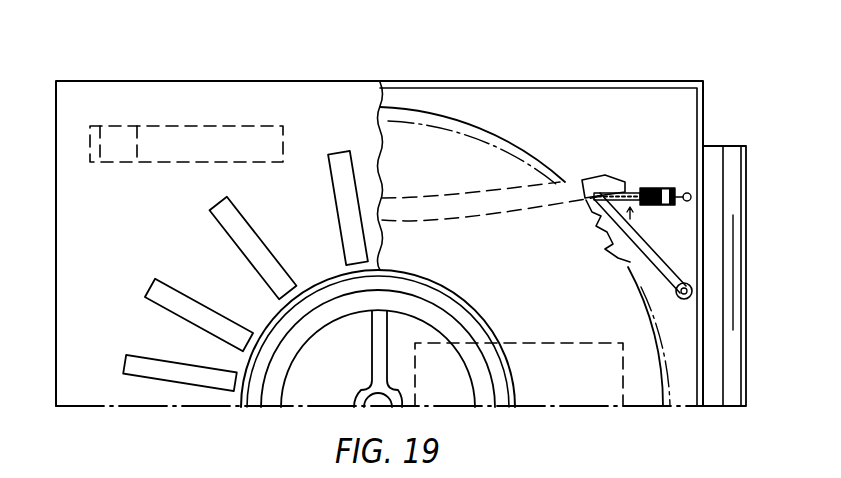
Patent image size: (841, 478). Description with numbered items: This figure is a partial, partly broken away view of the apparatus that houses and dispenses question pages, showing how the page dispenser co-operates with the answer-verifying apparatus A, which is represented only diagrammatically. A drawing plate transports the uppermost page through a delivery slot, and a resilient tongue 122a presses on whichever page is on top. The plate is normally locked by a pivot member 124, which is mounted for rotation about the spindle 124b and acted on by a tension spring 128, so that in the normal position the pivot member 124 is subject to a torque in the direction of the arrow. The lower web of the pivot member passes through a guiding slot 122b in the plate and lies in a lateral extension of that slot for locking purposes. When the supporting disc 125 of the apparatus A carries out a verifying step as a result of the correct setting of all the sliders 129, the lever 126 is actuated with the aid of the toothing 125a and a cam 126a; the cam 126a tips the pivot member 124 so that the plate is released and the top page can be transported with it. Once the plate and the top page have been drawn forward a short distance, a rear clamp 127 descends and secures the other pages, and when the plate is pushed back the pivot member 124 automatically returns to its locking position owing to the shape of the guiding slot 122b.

The answer-verifying apparatus A is at (100, 92).
The rear clamp 127 is at (94, 163).
The sliders 129 is at (232, 210).
The resilient tongue 122a is at (622, 393).
The guiding slot 122b is at (442, 196).
The supporting disc 125 is at (600, 406).
The toothing 125a is at (617, 252).
The cam 126a is at (597, 217).
The lever 126 is at (640, 280).
The pivot member 124 is at (638, 189).
The tension spring 128 is at (668, 187).
The spindle 124b is at (657, 205).